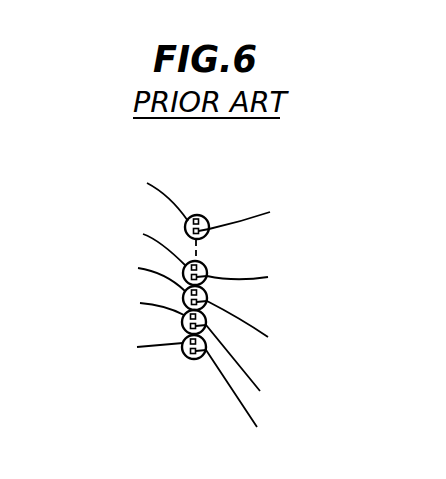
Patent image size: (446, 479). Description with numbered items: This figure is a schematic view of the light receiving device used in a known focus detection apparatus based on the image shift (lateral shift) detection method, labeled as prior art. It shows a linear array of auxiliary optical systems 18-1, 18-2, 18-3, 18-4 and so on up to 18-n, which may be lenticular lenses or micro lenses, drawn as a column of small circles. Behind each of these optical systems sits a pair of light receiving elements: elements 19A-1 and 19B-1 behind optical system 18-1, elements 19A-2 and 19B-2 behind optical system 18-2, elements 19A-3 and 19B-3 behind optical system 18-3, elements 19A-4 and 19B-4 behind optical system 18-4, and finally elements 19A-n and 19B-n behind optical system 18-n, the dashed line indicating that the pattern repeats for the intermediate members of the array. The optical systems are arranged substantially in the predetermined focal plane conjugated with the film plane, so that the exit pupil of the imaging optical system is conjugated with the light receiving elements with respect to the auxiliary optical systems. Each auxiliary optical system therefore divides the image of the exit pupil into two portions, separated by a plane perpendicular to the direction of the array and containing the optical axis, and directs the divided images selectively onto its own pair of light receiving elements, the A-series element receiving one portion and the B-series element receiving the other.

The auxiliary optical system 18-n is at (207, 218).
The auxiliary optical system 18-4 is at (205, 265).
The auxiliary optical system 18-3 is at (205, 290).
The auxiliary optical system 18-2 is at (206, 316).
The auxiliary optical system 18-1 is at (192, 359).
The light receiving element 19A-n is at (129, 190).
The light receiving element 19A-4 is at (127, 240).
The light receiving element 19A-3 is at (125, 270).
The light receiving element 19A-2 is at (123, 304).
The light receiving element 19A-1 is at (122, 344).
The light receiving element 19B-n is at (271, 212).
The light receiving element 19B-4 is at (270, 279).
The light receiving element 19B-3 is at (272, 329).
The light receiving element 19B-2 is at (266, 374).
The light receiving element 19B-1 is at (261, 402).